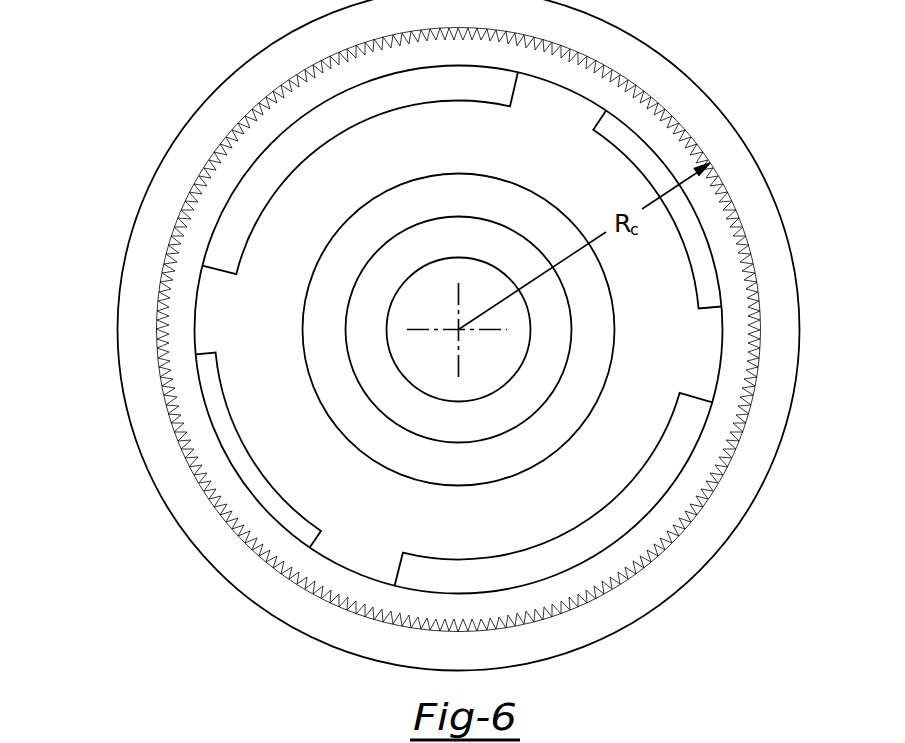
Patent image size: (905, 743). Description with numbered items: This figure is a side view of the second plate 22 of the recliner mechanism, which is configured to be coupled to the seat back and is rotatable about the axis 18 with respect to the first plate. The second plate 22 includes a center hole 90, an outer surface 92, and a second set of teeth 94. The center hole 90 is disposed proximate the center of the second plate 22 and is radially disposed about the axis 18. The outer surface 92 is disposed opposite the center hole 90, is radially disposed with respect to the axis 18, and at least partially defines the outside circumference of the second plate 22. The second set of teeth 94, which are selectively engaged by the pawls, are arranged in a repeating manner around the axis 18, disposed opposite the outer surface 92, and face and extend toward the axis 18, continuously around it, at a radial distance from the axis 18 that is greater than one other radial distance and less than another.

The second plate 22 is at (235, 73).
The outer surface 92 is at (117, 340).
The second set of teeth 94 is at (730, 233).
The axis 18 is at (458, 327).
The center hole 90 is at (497, 361).